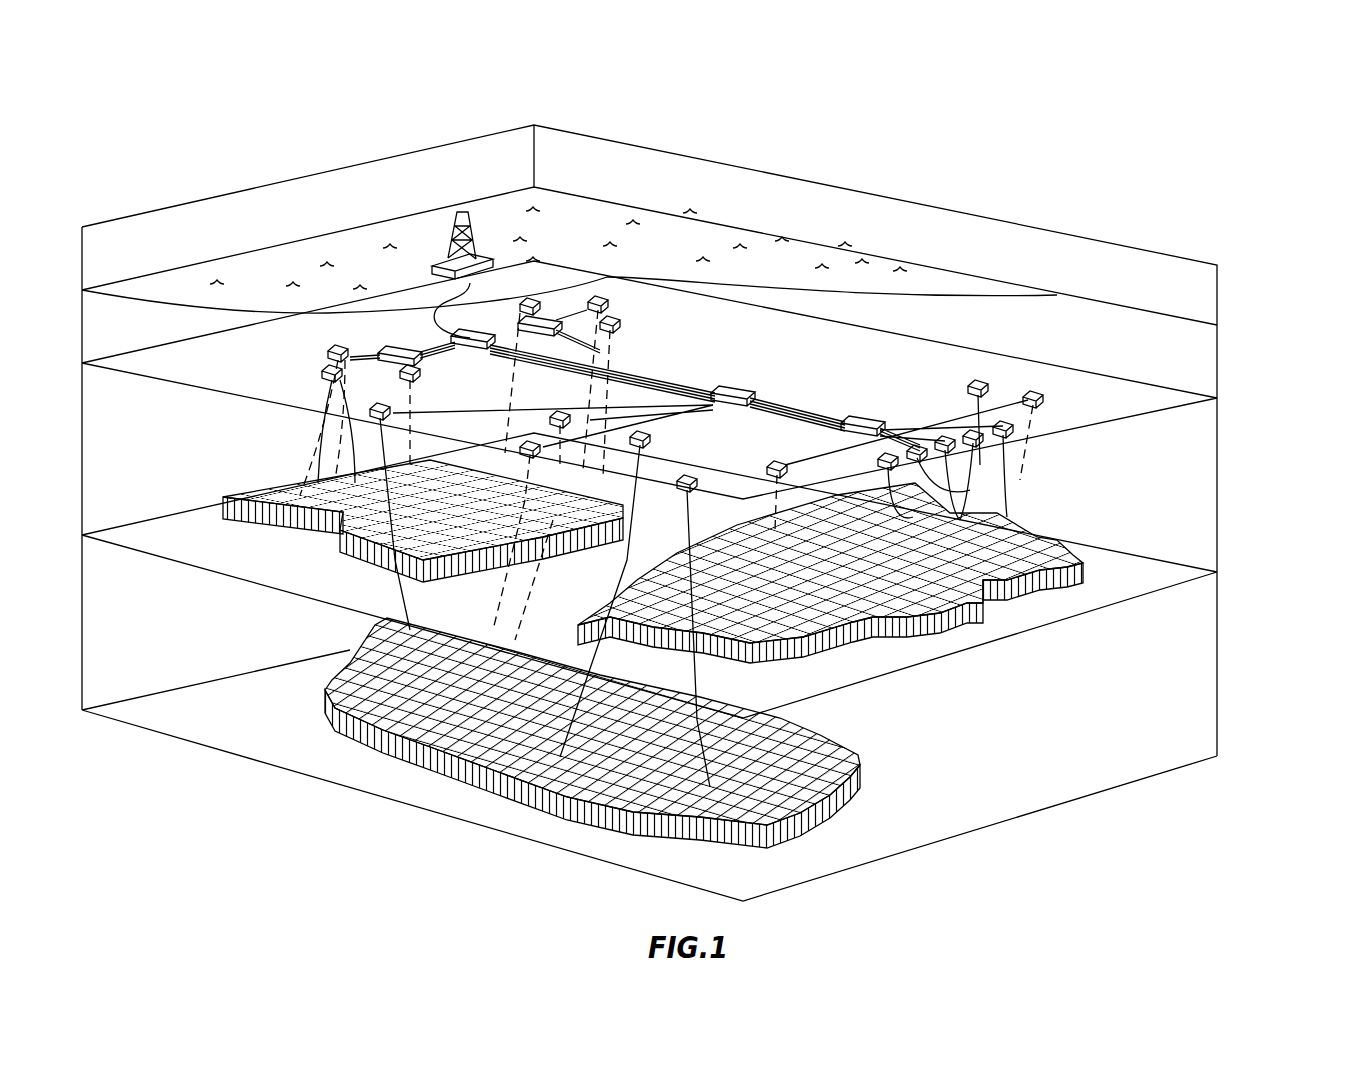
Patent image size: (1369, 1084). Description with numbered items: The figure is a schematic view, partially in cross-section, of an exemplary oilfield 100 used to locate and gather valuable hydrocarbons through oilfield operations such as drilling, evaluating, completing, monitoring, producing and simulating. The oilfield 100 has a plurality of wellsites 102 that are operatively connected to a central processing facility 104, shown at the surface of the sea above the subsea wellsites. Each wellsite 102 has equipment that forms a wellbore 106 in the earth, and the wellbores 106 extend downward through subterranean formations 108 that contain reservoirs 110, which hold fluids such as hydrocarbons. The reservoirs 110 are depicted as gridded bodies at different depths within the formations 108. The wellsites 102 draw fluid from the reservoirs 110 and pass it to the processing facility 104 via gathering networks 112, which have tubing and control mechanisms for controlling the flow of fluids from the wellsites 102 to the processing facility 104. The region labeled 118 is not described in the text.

The oilfield 100 is at (132, 150).
The wellsite 102 is at (790, 453).
The central processing facility 104 is at (430, 262).
The wellbore 106 is at (985, 492).
The subterranean formation 108 is at (1232, 406).
The reservoir 110 is at (833, 808).
The gathering network 112 is at (363, 375).
The sea surface 118 is at (447, 185).